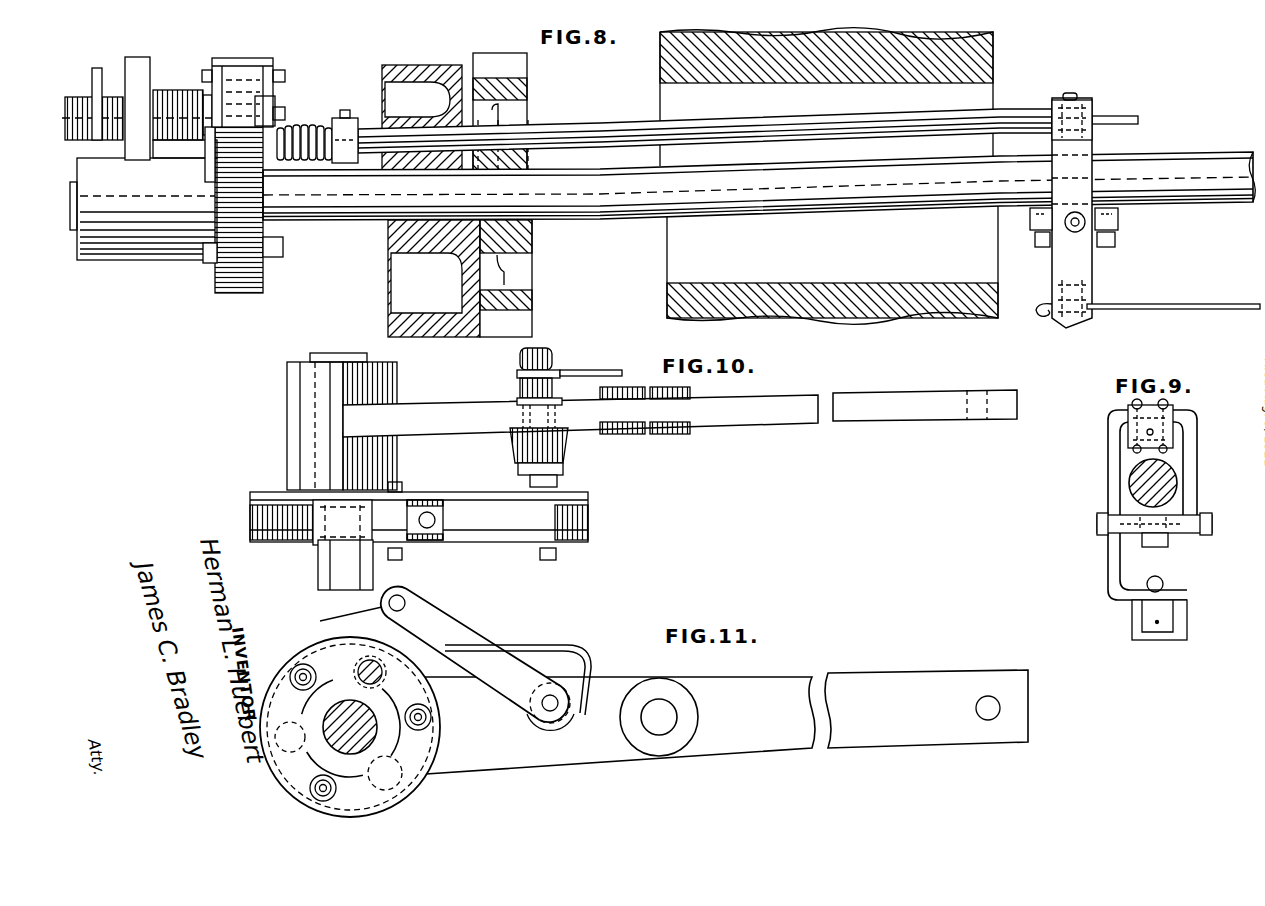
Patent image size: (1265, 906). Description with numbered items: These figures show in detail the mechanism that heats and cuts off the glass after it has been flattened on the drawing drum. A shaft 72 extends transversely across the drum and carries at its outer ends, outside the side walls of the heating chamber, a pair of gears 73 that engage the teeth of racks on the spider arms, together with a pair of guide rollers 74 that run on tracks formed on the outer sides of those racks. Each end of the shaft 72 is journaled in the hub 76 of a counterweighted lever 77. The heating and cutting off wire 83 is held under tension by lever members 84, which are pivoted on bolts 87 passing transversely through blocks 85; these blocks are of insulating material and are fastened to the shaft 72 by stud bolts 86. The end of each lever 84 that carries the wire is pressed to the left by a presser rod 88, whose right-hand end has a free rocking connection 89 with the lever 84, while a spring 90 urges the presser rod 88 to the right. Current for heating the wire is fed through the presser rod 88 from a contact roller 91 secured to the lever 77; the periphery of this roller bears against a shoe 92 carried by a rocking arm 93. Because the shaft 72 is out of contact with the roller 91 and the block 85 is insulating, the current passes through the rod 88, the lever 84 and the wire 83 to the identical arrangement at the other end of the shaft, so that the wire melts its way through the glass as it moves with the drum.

In FIG. 8, the shaft 72 is at (620, 208).
In FIG. 10, the shaft 72 is at (317, 562).
In FIG. 9, the shaft 72 is at (1173, 478).
In FIG. 11, the shaft 72 is at (340, 747).
In FIG. 8, the gears 73 is at (532, 316).
In FIG. 8, the guide rollers 74 is at (415, 66).
In FIG. 8, the hub 76 is at (187, 252).
In FIG. 8, the counterweighted lever 77 is at (150, 64).
In FIG. 10, the counterweighted lever 77 is at (783, 412).
In FIG. 11, the counterweighted lever 77 is at (897, 677).
In FIG. 8, the heating and cutting off wire 83 is at (1192, 298).
In FIG. 9, the heating and cutting off wire 83 is at (1157, 623).
In FIG. 8, the lever members 84 is at (1083, 268).
In FIG. 9, the lever members 84 is at (1112, 567).
In FIG. 8, the blocks 85 is at (1032, 225).
In FIG. 9, the blocks 85 is at (1182, 533).
In FIG. 8, the stud bolts 86 is at (1107, 243).
In FIG. 8, the bolts 87 is at (1065, 243).
In FIG. 9, the bolts 87 is at (1213, 524).
In FIG. 8, the presser rod 88 is at (636, 116).
In FIG. 9, the presser rod 88 is at (1177, 428).
In FIG. 11, the presser rod 88 is at (363, 670).
In FIG. 8, the free rocking connection 89 is at (1057, 106).
In FIG. 8, the spring 90 is at (320, 126).
In FIG. 8, the contact roller 91 is at (250, 283).
In FIG. 10, the contact roller 91 is at (250, 523).
In FIG. 11, the contact roller 91 is at (417, 790).
In FIG. 8, the shoe 92 is at (265, 102).
In FIG. 10, the shoe 92 is at (410, 495).
In FIG. 11, the shoe 92 is at (331, 648).
In FIG. 8, the rocking arm 93 is at (273, 61).
In FIG. 10, the rocking arm 93 is at (488, 543).
In FIG. 11, the rocking arm 93 is at (467, 633).